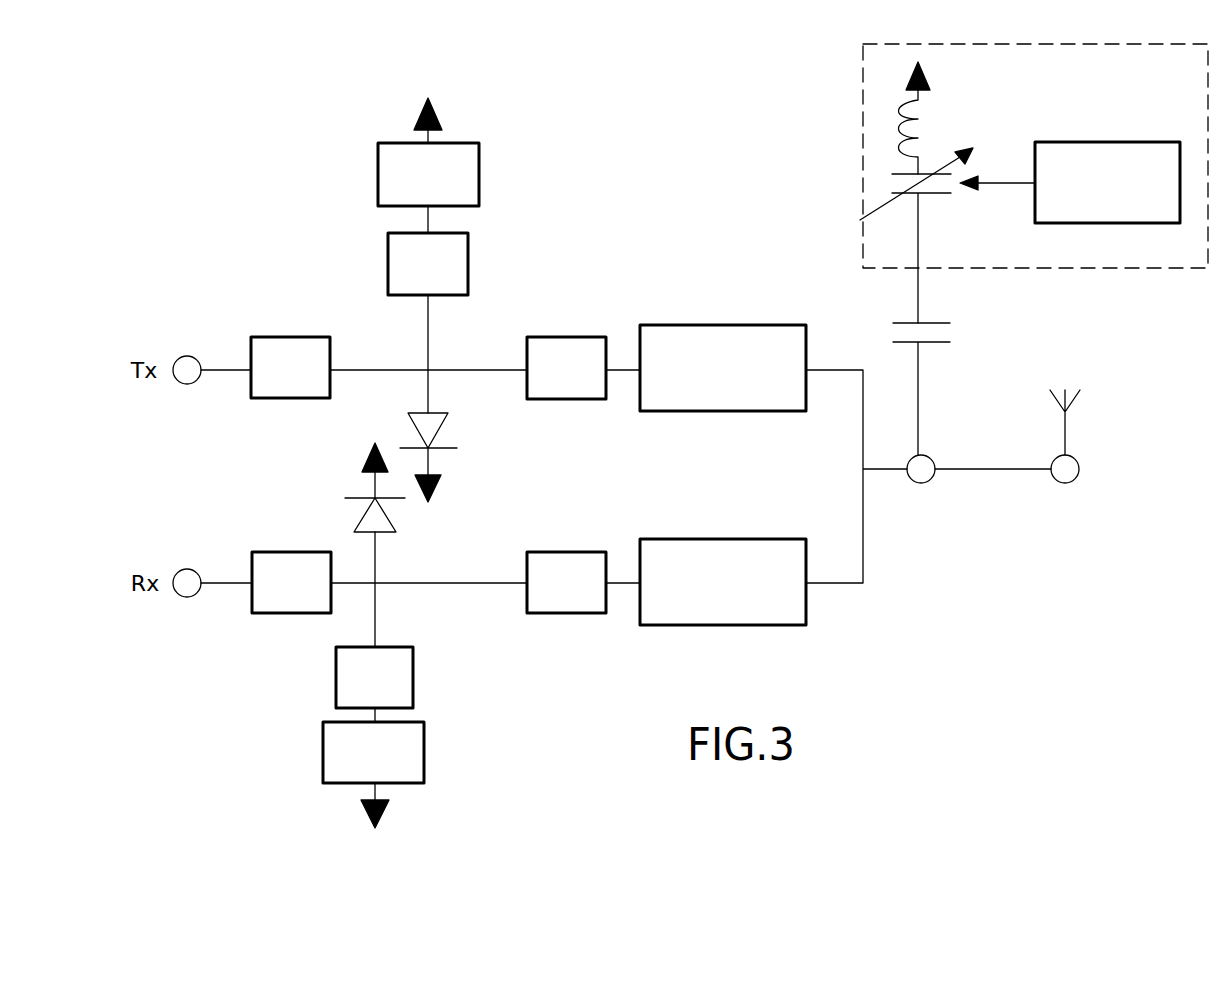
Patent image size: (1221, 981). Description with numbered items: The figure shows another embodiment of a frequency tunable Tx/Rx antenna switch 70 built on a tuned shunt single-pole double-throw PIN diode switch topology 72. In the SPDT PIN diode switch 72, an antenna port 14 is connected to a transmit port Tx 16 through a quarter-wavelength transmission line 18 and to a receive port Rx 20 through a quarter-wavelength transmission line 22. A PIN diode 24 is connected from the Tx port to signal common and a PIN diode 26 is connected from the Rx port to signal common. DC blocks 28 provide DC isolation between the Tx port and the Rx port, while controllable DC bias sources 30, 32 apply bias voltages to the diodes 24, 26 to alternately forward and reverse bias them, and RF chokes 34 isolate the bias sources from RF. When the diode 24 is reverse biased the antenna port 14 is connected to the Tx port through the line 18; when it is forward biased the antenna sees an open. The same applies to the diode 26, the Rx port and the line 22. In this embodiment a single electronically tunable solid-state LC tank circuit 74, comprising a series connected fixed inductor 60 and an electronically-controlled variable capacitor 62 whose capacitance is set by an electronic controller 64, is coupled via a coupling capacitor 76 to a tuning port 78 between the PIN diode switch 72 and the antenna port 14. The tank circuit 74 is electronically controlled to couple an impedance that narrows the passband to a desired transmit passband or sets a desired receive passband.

The antenna port 14 is at (1071, 484).
The transmit port Tx 16 is at (187, 356).
The quarter-wavelength transmission line 18 is at (725, 411).
The receive port Rx 20 is at (187, 597).
The quarter-wavelength transmission line 22 is at (717, 539).
The PIN diode 24 is at (408, 423).
The PIN diode 26 is at (357, 518).
The DC block 28 is at (268, 399).
The controllable DC bias source 30 is at (479, 172).
The controllable DC bias source 32 is at (424, 751).
The RF choke 34 is at (468, 262).
The fixed inductor 60 is at (921, 115).
The electronically-controlled variable capacitor 62 is at (938, 196).
The electronic controller 64 is at (1110, 142).
The frequency tunable Tx/Rx antenna switch 70 is at (292, 236).
The SPDT PIN diode switch 72 is at (312, 480).
The electronically tunable solid-state LC tank circuit 74 is at (866, 135).
The coupling capacitor 76 is at (893, 322).
The tuning port 78 is at (928, 484).